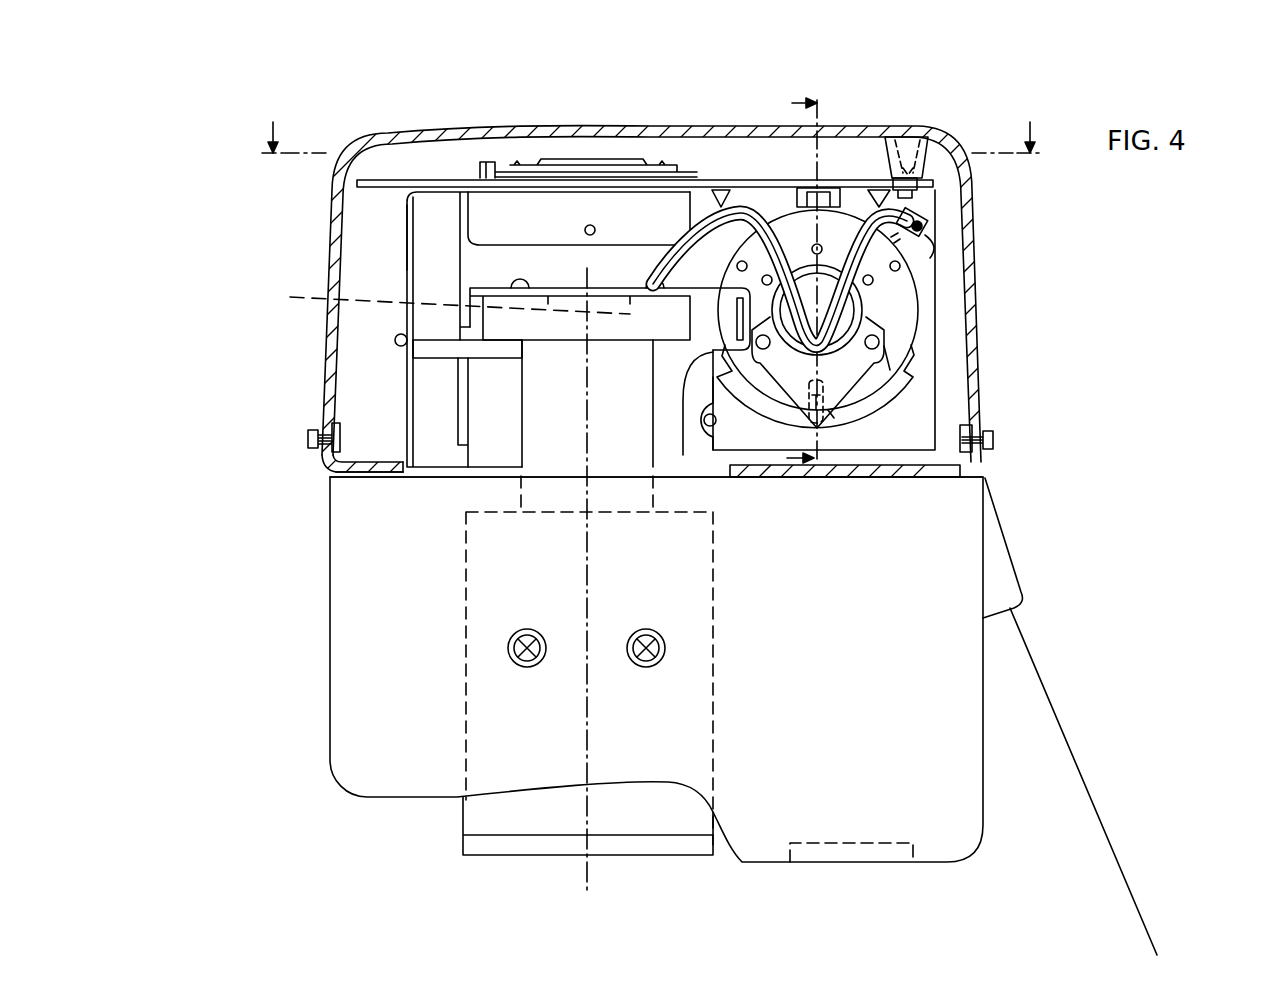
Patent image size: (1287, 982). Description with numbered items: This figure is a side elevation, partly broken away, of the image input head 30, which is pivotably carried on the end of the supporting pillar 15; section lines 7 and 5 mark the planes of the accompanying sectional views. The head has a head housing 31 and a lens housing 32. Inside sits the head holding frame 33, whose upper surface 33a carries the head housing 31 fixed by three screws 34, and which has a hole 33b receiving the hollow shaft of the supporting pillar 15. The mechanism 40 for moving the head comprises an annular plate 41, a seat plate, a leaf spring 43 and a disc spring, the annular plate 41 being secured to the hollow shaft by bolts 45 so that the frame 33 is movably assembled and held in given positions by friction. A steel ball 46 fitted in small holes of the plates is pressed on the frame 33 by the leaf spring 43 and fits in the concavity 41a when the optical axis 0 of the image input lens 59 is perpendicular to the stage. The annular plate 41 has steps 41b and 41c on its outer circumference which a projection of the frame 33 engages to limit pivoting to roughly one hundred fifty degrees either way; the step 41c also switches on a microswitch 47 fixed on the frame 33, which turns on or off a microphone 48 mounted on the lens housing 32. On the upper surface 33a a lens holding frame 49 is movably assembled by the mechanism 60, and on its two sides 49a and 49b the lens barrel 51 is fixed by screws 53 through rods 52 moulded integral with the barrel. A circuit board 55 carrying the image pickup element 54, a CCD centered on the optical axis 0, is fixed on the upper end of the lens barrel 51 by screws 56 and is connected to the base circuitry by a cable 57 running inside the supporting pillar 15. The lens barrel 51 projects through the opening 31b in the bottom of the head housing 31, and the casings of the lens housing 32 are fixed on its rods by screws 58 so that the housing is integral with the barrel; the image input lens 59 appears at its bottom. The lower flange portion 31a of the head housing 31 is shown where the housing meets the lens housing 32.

The section line 7- 7 is at (652, 121).
The section line 5- 5 is at (792, 276).
The supporting pillar 15 is at (1043, 722).
The image input head 30 is at (230, 491).
The head housing 31 is at (526, 128).
The flange 31a is at (365, 482).
The opening 31b is at (405, 480).
The lens housing 32 is at (350, 625).
The head holding frame 33 is at (927, 263).
The upper surface 33a is at (384, 180).
The hole 33b is at (834, 186).
The screws 34 is at (917, 127).
The mechanism for moving the image input head 40 is at (930, 305).
The annular plate 41 is at (910, 293).
The concavity 41a is at (827, 390).
The step 41b is at (720, 367).
The step 41c is at (907, 370).
The leaf spring 43 is at (832, 418).
The bolts 45 is at (817, 247).
The steel ball 46 is at (822, 427).
The microswitch 47 is at (928, 215).
The microphone 48 is at (842, 862).
The lens holding frame 49 is at (440, 192).
The side 49a is at (410, 268).
The side 49b is at (475, 265).
The lens barrel 51 is at (530, 435).
The rods 52 is at (428, 346).
The screws 53 is at (395, 340).
The image pickup element 54 is at (444, 299).
The circuit board 55 is at (480, 298).
The screws 56 is at (660, 280).
The cable 57 is at (730, 213).
The screws 58 is at (513, 657).
The image input lens 59 is at (660, 857).
The mechanism for moving the image input lens 60 is at (622, 147).
The optical axis 0 is at (583, 599).